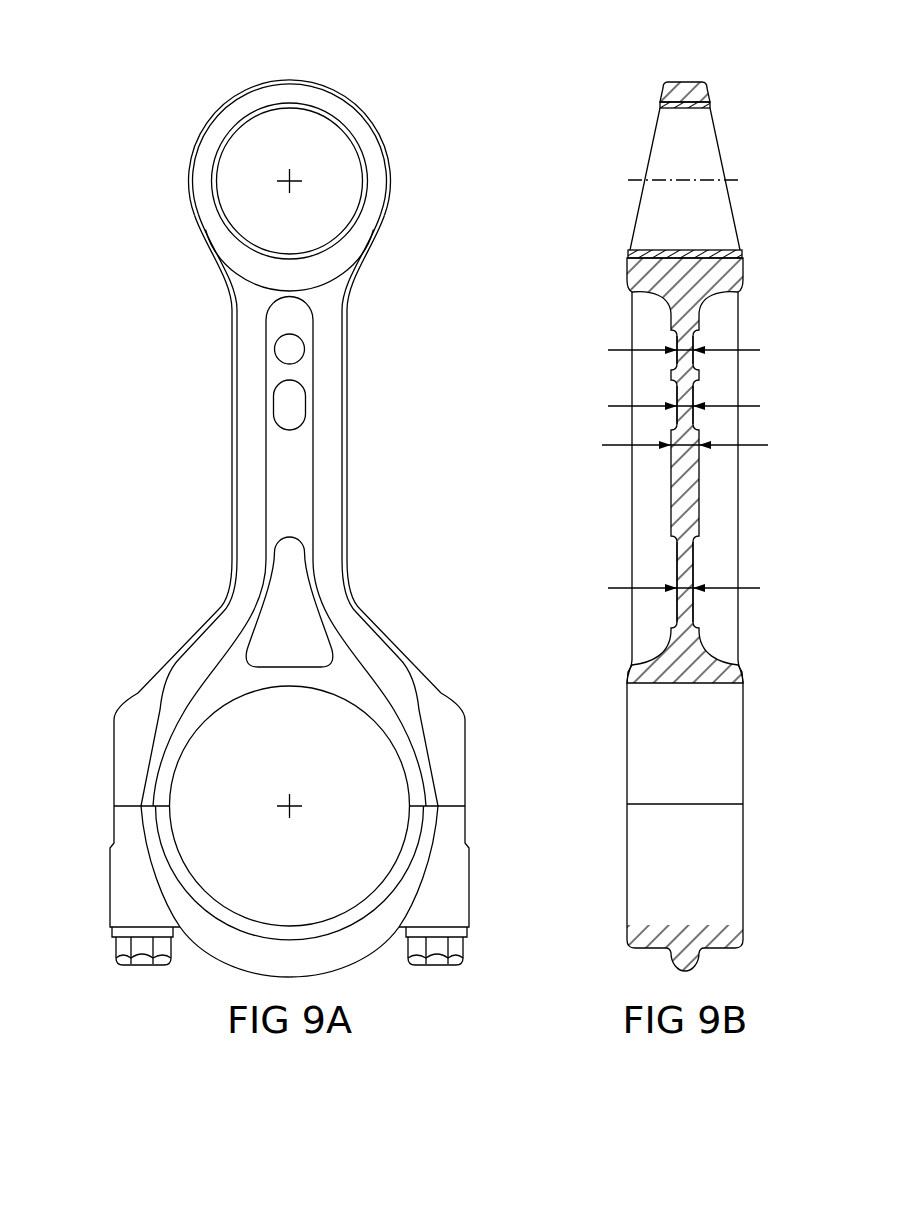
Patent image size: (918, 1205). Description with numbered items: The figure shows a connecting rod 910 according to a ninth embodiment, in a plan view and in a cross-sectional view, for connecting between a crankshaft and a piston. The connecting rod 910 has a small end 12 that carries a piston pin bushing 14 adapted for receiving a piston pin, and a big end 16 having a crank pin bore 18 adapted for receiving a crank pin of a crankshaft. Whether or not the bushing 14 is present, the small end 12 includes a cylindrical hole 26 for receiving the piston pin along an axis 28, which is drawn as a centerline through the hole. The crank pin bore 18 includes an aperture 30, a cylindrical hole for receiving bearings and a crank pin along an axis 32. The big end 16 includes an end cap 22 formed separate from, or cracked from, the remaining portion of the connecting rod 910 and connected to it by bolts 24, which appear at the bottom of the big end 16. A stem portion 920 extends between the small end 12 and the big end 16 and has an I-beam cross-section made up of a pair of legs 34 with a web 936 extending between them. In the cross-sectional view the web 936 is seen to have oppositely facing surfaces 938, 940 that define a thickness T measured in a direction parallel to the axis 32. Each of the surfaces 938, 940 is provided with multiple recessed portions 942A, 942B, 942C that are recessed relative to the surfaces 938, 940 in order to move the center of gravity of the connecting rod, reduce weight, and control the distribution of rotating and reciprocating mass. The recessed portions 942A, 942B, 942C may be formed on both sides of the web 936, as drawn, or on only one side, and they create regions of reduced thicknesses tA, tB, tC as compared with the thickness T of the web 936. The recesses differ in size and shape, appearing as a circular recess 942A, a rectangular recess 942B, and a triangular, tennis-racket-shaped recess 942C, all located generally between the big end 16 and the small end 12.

In FIG. 9A, the small end 12 is at (368, 92).
In FIG. 9B, the small end 12 is at (652, 72).
In FIG. 9A, the piston pin bushing 14 is at (375, 165).
In FIG. 9B, the piston pin bushing 14 is at (690, 90).
In FIG. 9A, the big end 16 is at (490, 762).
In FIG. 9A, the crank pin bore 18 is at (455, 692).
In FIG. 9B, the crank pin bore 18 is at (727, 673).
In FIG. 9A, the end cap 22 is at (350, 953).
In FIG. 9B, the end cap 22 is at (647, 935).
In FIG. 9A, the bolts 24 is at (122, 950).
In FIG. 9A, the cylindrical hole 26 is at (356, 218).
In FIG. 9B, the cylindrical hole 26 is at (657, 250).
In FIG. 9A, the axis 28 is at (288, 180).
In FIG. 9B, the axis 28 is at (635, 177).
In FIG. 9A, the aperture 30 is at (400, 878).
In FIG. 9B, the aperture 30 is at (657, 687).
In FIG. 9A, the axis 32 is at (285, 812).
In FIG. 9B, the axis 32 is at (652, 803).
In FIG. 9A, the legs 34 is at (248, 373).
In FIG. 9B, the legs 34 is at (738, 480).
In FIG. 9A, the connecting rod 910 is at (405, 348).
In FIG. 9B, the connecting rod 910 is at (612, 317).
In FIG. 9A, the stem portion 920 is at (350, 477).
In FIG. 9B, the stem portion 920 is at (632, 525).
In FIG. 9A, the web 936 is at (285, 458).
In FIG. 9B, the web 936 is at (671, 477).
In FIG. 9B, the surface 938 is at (698, 515).
In FIG. 9B, the surface 940 is at (670, 512).
In FIG. 9A, the recessed portion 942A is at (290, 349).
In FIG. 9B, the recessed portion 942A is at (698, 342).
In FIG. 9A, the recessed portion 942B is at (288, 405).
In FIG. 9B, the recessed portion 942B is at (670, 392).
In FIG. 9A, the recessed portion 942C is at (282, 630).
In FIG. 9B, the recessed portion 942C is at (670, 577).
In FIG. 9B, the reduced thickness tA is at (671, 349).
In FIG. 9B, the reduced thickness tB is at (671, 405).
In FIG. 9B, the reduced thickness tC is at (671, 587).
In FIG. 9B, the thickness T is at (679, 444).